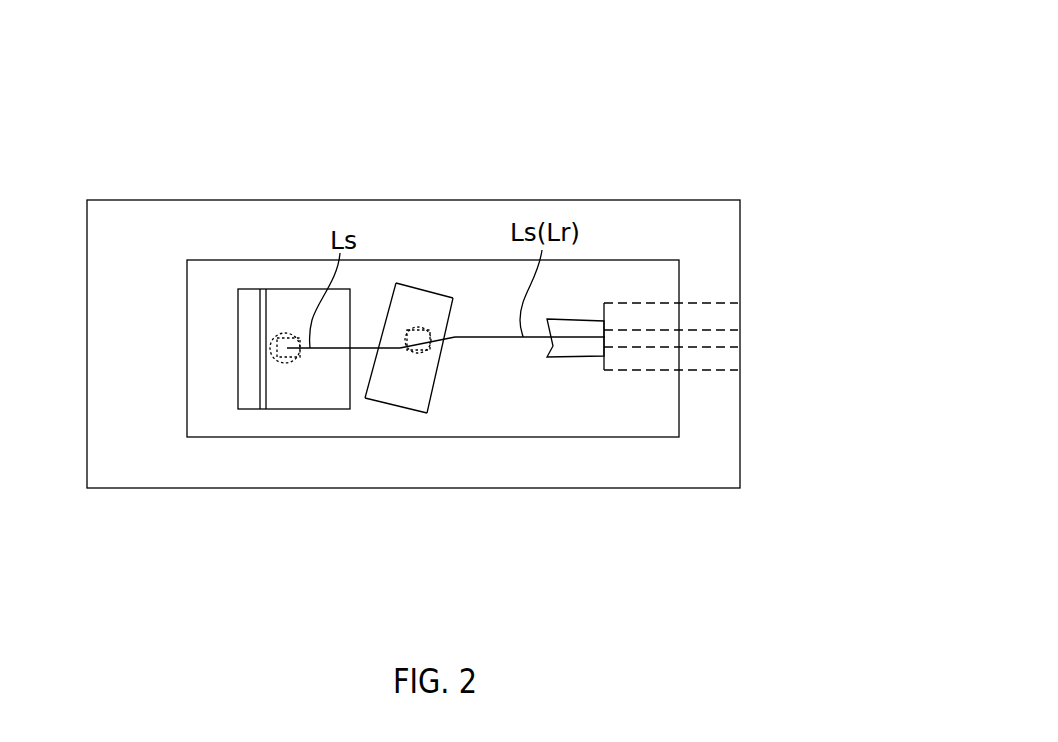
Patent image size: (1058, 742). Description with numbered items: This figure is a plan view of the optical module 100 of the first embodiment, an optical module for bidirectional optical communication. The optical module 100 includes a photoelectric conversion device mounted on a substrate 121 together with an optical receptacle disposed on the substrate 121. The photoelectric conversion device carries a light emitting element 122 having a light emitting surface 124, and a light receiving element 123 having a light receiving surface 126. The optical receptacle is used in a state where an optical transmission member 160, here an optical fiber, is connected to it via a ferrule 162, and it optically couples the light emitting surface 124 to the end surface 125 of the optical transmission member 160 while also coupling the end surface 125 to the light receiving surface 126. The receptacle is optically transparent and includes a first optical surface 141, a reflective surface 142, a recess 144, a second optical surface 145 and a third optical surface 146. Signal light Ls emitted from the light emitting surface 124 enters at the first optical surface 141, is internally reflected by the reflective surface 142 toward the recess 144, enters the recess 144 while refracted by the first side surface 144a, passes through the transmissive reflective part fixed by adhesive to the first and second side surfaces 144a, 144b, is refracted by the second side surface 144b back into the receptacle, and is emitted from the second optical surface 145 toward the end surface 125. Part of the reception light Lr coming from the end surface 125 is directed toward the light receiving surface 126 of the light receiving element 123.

The optical module 100 is at (730, 103).
The substrate 121 is at (122, 470).
The light emitting element 122 is at (280, 363).
The light receiving element 123 is at (427, 353).
The light emitting surface 124 is at (290, 363).
The end surface 125 is at (604, 344).
The light receiving surface 126 is at (405, 355).
The first optical surface 141 is at (275, 358).
The reflective surface 142 is at (293, 313).
The recess 144 is at (420, 272).
The first side surface 144a is at (388, 313).
The second side surface 144b is at (452, 320).
The second optical surface 145 is at (548, 344).
The third optical surface 146 is at (417, 360).
The optical transmission member 160 is at (713, 347).
The ferrule 162 is at (707, 303).